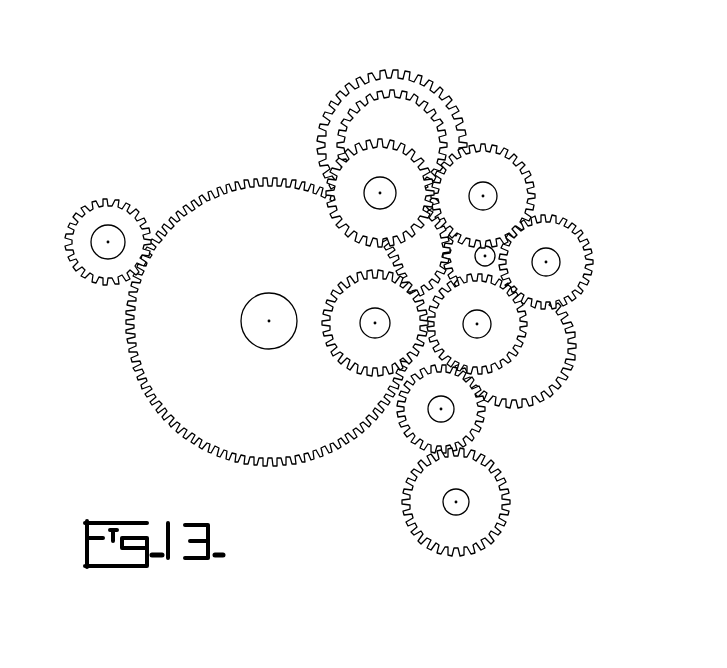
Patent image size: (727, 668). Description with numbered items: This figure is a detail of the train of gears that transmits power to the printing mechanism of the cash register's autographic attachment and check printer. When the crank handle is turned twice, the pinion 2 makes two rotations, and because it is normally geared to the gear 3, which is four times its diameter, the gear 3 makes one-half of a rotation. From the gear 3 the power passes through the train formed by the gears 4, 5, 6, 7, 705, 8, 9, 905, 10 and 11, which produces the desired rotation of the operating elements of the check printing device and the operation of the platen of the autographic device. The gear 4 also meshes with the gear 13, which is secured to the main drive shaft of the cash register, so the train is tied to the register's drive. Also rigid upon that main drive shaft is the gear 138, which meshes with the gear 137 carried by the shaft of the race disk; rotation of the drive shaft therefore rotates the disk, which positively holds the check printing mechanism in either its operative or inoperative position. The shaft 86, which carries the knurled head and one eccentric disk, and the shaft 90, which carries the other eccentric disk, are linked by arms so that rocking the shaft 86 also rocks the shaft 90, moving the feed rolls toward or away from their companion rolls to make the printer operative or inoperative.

The pinion 2 is at (93, 202).
The gear 3 is at (212, 188).
The gear 4 is at (426, 78).
The gear 5 is at (423, 103).
The gear 6 is at (502, 150).
The gear 7 is at (513, 157).
The gear 8 is at (587, 237).
The gear 9 is at (532, 333).
The gear 10 is at (400, 425).
The gear 11 is at (498, 477).
The gear 13 is at (538, 198).
The gear 137 is at (563, 340).
The gear 138 is at (443, 260).
The gear 705 is at (325, 160).
The shaft 90 is at (363, 193).
The gear 905 is at (353, 277).
The shaft 86 is at (367, 327).